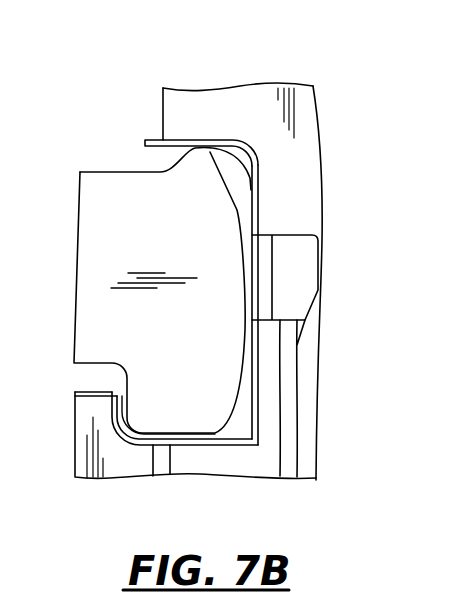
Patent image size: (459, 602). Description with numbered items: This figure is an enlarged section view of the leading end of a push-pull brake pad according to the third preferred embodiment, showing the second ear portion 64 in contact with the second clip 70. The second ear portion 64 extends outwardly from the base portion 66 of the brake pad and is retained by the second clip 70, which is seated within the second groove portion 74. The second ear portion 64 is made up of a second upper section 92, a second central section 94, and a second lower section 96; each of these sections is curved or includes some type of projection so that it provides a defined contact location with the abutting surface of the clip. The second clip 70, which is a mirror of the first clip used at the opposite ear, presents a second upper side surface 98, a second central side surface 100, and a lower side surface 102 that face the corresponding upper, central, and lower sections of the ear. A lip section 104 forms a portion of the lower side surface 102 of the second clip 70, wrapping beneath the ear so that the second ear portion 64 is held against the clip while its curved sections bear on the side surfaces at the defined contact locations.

The second ear portion 64 is at (143, 183).
The base portion 66 is at (88, 193).
The second clip 70 is at (152, 141).
The second groove portion 74 is at (250, 437).
The second upper section 92 is at (200, 158).
The second central section 94 is at (222, 273).
The second lower section 96 is at (167, 420).
The second upper side surface 98 is at (213, 143).
The second central side surface 100 is at (258, 325).
The lower side surface 102 is at (178, 443).
The lip section 104 is at (113, 394).